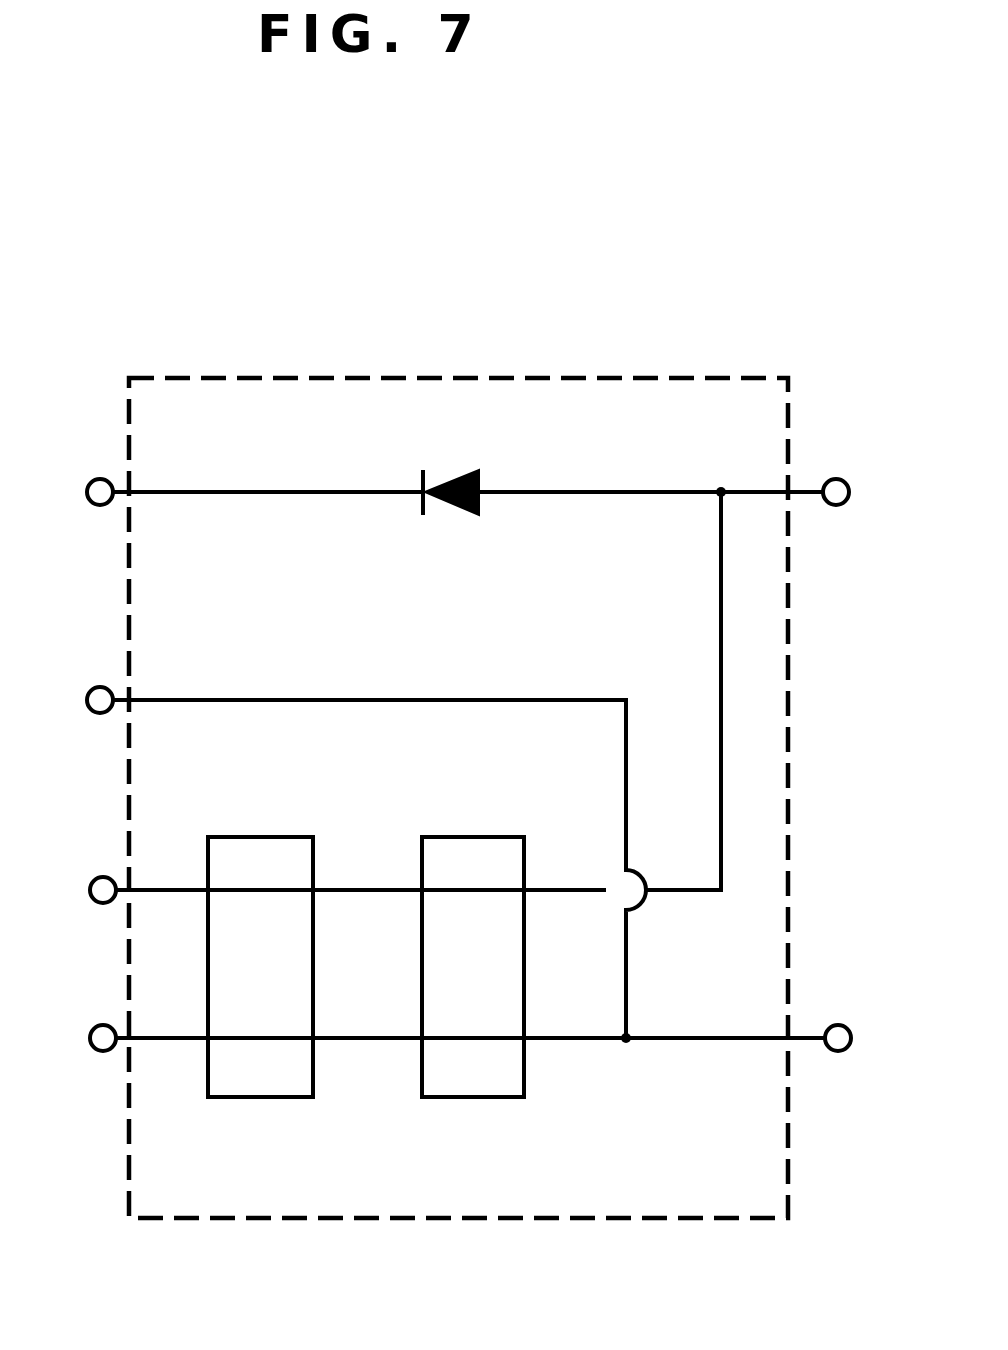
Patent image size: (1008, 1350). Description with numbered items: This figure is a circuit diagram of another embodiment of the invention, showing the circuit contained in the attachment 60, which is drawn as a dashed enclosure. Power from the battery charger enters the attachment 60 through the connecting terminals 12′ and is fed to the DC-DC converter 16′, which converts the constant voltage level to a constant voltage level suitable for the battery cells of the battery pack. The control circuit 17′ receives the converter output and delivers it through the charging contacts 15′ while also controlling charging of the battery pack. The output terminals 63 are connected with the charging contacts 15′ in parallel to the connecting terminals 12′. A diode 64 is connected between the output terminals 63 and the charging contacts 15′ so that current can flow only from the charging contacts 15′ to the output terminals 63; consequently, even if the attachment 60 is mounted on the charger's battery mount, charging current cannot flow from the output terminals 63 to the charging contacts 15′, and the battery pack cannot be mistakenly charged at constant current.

The attachment 60 is at (333, 377).
The output terminals 63 is at (91, 505).
The diode 64 is at (455, 473).
The charging contacts 15′ is at (835, 506).
The connecting terminals 12′ is at (98, 905).
The DC-DC converter 16′ is at (263, 1099).
The control circuit 17′ is at (486, 1099).